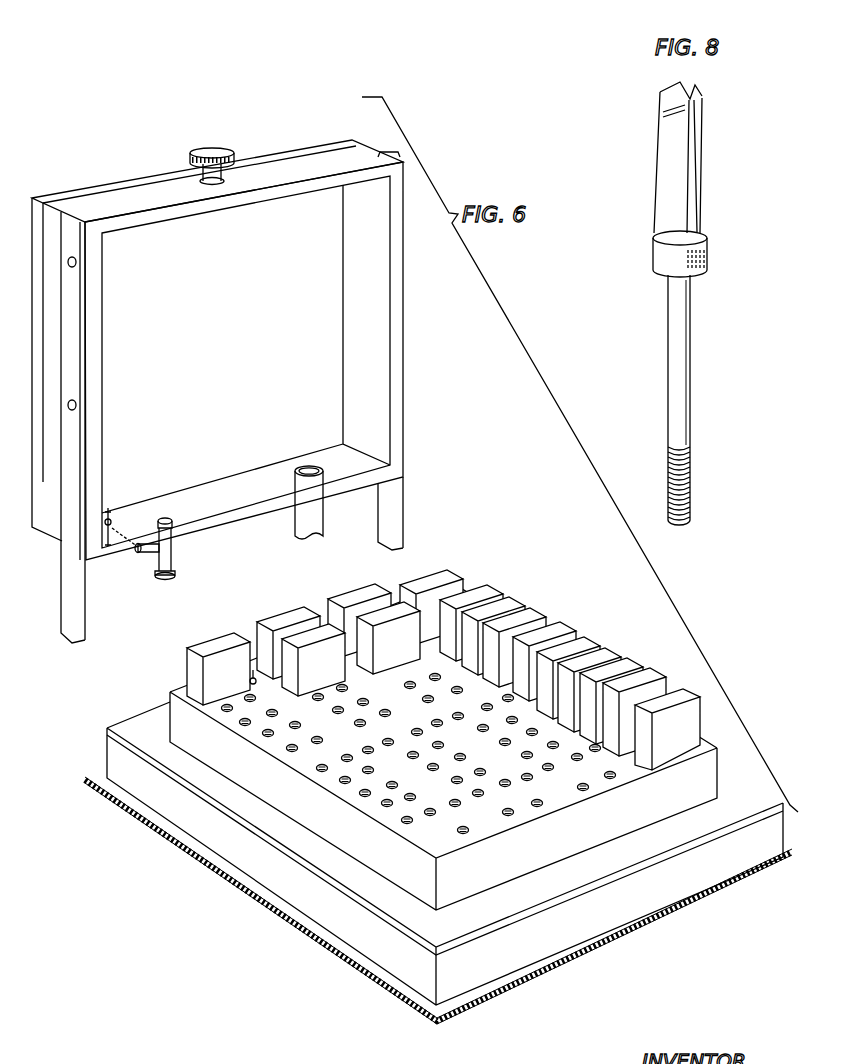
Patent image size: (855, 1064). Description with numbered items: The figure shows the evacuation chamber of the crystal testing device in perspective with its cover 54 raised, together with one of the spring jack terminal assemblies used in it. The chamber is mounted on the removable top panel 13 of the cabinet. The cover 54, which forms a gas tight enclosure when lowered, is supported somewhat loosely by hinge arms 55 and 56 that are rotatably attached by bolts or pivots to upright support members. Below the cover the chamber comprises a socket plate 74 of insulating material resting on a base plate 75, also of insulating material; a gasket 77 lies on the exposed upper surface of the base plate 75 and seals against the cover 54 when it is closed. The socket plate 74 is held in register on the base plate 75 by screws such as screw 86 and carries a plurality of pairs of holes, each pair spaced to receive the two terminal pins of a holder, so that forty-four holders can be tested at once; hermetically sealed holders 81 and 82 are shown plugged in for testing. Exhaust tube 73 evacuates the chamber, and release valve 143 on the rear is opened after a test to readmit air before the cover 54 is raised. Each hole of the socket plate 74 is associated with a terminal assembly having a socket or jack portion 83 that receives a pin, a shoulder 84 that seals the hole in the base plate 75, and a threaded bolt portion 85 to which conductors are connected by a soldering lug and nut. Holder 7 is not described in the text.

In FIG. 6, the cover 54 is at (398, 366).
In FIG. 6, the hinge arm 55 is at (87, 589).
In FIG. 6, the hinge arm 56 is at (382, 521).
In FIG. 6, the exhaust tube 73 is at (296, 530).
In FIG. 6, the release valve 143 is at (173, 549).
In FIG. 6, the top panel 13 is at (265, 894).
In FIG. 6, the gasket 77 is at (279, 850).
In FIG. 6, the base plate 75 is at (145, 800).
In FIG. 6, the socket plate 74 is at (443, 745).
In FIG. 6, the tray 7 is at (524, 580).
In FIG. 6, the hermetically sealed holder 81 is at (223, 642).
In FIG. 6, the hermetically sealed holder 82 is at (292, 618).
In FIG. 6, the screw 86 is at (253, 676).
In FIG. 8, the socket or jack portion 83 is at (665, 160).
In FIG. 8, the shoulder 84 is at (703, 251).
In FIG. 8, the threaded bolt portion 85 is at (690, 376).